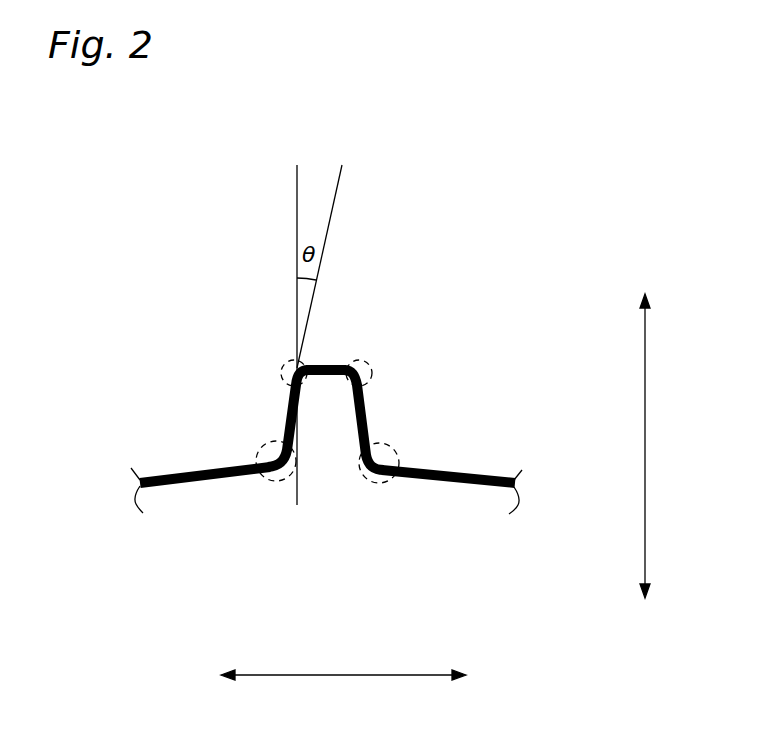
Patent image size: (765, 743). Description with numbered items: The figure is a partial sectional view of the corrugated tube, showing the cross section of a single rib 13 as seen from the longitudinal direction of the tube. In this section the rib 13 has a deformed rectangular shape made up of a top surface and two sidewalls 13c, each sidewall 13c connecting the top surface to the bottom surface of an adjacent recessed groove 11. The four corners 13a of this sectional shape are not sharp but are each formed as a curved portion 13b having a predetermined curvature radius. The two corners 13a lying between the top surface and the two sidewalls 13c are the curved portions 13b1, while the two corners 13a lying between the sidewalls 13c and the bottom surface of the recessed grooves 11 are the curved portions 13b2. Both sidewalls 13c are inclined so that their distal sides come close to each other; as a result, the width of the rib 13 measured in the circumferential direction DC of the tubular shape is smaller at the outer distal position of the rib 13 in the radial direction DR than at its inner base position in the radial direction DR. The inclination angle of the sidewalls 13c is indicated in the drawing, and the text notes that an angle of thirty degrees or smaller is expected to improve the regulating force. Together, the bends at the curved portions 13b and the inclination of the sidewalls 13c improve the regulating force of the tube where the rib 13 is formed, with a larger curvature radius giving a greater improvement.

The recessed groove 11 is at (155, 470).
The rib 13 is at (399, 238).
The corner 13a is at (293, 360).
The curved portion 13b is at (327, 444).
The curved portion 13b1 is at (295, 362).
The curved portion 13b2 is at (280, 486).
The sidewall 13c is at (283, 414).
The radial direction DR is at (666, 446).
The circumferential direction DC is at (343, 700).